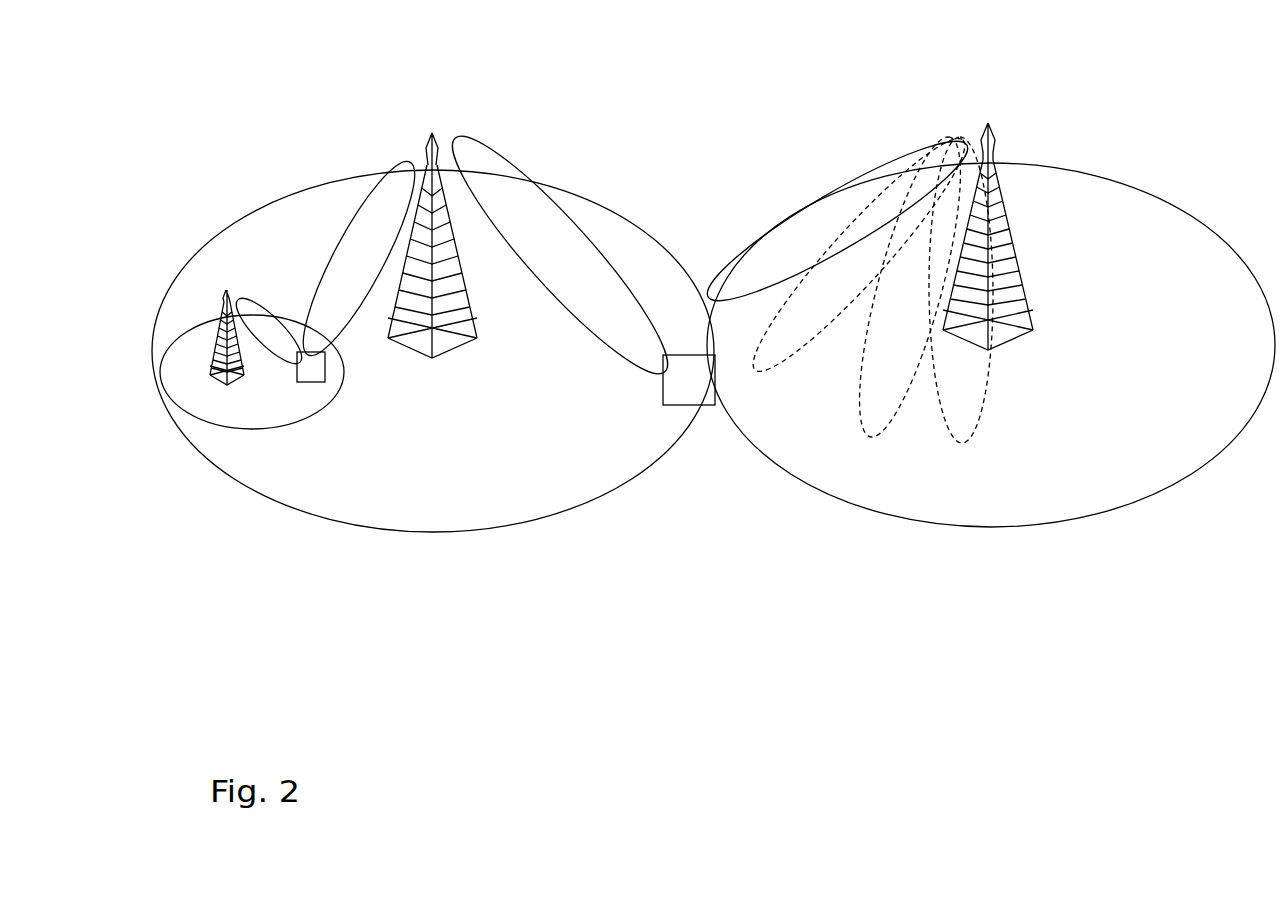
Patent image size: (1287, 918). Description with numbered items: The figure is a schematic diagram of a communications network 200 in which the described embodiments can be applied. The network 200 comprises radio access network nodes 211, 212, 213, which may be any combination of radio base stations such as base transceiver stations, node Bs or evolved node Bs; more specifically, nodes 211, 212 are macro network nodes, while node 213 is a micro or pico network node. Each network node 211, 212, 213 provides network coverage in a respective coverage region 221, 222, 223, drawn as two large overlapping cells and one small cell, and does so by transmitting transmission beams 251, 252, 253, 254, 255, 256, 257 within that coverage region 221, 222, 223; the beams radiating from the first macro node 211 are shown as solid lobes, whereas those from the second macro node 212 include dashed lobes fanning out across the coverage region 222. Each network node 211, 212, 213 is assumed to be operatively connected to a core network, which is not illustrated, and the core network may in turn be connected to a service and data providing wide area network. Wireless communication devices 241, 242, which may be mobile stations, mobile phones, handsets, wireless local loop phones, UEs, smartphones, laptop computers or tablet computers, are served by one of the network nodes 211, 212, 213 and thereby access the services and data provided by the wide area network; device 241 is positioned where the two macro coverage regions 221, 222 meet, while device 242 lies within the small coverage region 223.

The communications network 200 is at (700, 370).
The macro network node 211 is at (460, 343).
The macro network node 212 is at (1033, 315).
The micro network node 213 is at (213, 385).
The coverage region 221 is at (346, 525).
The coverage region 222 is at (1108, 515).
The coverage region 223 is at (345, 382).
The wireless communication device 241 is at (697, 405).
The wireless communication device 242 is at (313, 383).
The transmission beam 251 is at (518, 178).
The transmission beam 252 is at (374, 203).
The transmission beam 253 is at (249, 298).
The transmission beam 254 is at (870, 164).
The transmission beam 255 is at (755, 371).
The transmission beam 256 is at (871, 437).
The seventh beam 257 is at (961, 444).